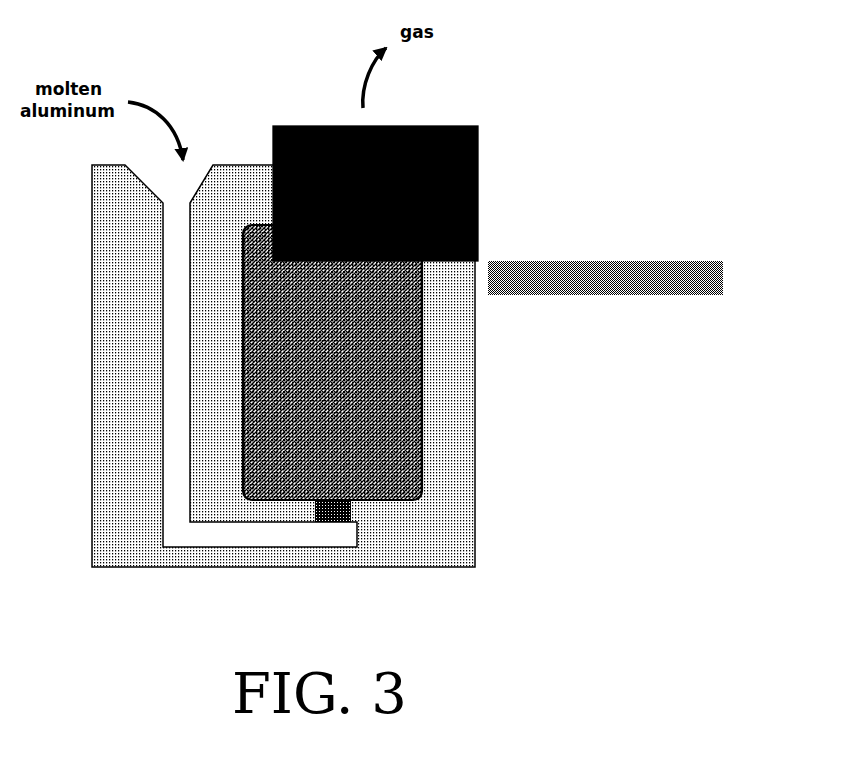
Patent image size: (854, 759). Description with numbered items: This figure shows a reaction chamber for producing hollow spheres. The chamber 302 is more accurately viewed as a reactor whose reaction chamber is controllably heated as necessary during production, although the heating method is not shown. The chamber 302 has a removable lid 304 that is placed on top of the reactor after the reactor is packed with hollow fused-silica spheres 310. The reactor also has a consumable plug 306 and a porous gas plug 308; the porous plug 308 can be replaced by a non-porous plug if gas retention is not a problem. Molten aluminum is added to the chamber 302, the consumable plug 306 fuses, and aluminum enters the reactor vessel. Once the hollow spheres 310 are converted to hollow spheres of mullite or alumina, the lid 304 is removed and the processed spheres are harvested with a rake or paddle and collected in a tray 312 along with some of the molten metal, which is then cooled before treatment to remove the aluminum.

The chamber 302 is at (124, 250).
The removable lid 304 is at (478, 186).
The consumable plug 306 is at (344, 503).
The porous gas plug 308 is at (368, 158).
The hollow spheres 310 is at (362, 407).
The tray 312 is at (624, 267).